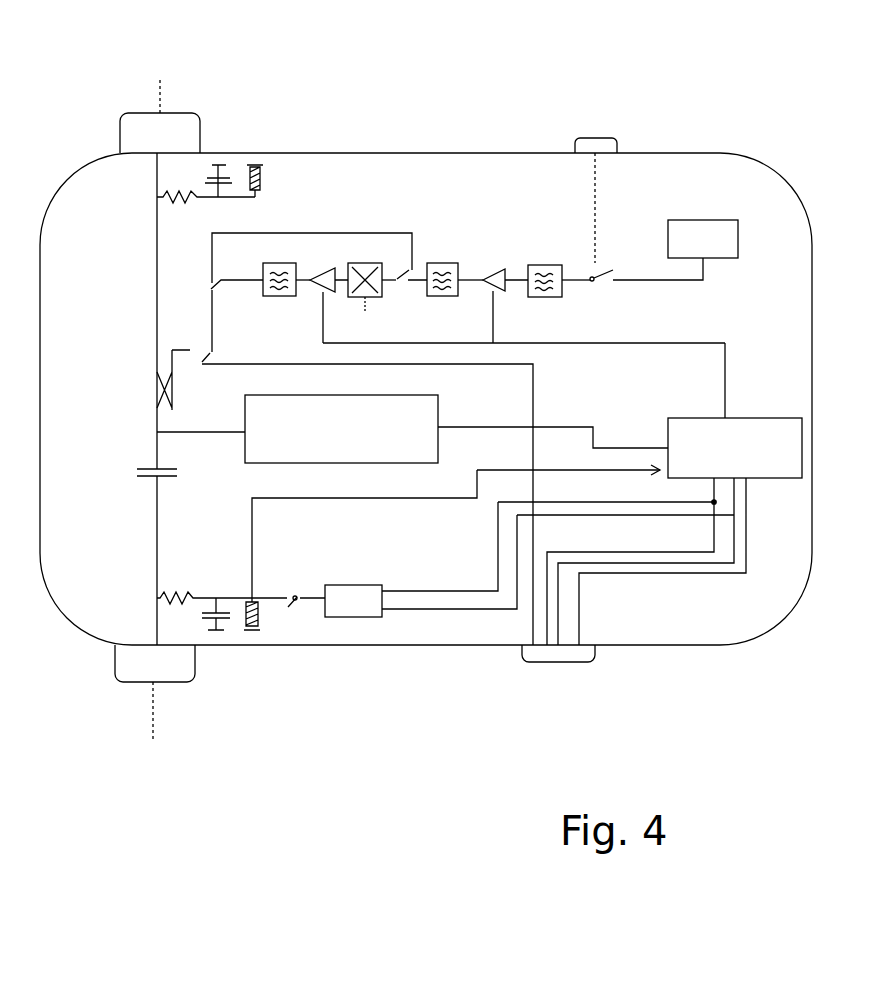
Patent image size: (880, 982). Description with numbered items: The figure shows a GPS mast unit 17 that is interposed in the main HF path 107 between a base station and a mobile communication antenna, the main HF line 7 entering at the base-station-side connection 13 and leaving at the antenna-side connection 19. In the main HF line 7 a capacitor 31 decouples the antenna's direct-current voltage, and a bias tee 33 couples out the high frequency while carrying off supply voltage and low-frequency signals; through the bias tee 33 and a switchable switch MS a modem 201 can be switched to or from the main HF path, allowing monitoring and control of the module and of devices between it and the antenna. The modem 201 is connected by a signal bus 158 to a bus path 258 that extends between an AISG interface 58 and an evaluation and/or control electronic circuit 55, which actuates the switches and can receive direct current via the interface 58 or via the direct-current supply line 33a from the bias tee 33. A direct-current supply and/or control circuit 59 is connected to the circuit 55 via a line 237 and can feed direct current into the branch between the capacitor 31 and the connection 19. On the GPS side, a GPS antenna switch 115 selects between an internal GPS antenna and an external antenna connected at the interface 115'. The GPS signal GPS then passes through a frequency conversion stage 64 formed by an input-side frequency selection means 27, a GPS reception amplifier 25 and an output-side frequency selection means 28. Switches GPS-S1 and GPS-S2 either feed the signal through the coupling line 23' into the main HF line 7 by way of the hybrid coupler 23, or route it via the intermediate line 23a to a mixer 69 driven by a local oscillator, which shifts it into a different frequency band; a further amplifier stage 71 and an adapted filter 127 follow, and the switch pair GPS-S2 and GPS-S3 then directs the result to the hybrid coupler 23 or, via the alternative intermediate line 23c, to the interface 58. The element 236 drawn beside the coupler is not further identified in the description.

The GPS mast unit 17 is at (73, 622).
The antenna-side connection 19 is at (128, 110).
The main HF path 107 is at (160, 80).
The base-station-side connection 13 is at (123, 685).
The main HF line 7 is at (152, 523).
The capacitor 31 is at (125, 472).
The bias tee 33 is at (196, 578).
The direct-current supply line 33a is at (405, 498).
The modem 201 is at (363, 617).
The signal bus 158 is at (408, 616).
The switchable switch MS is at (295, 615).
The bus path 258 is at (590, 604).
The AISG interface 58 is at (585, 660).
The evaluation and/or control electronic circuit 55 is at (747, 426).
The direct-current supply circuit and/or control circuit 59 is at (425, 412).
The GPS signal GPS is at (560, 416).
The line 237 is at (559, 459).
The coupling line 23' is at (311, 187).
The alternative intermediate line 23c is at (233, 367).
The hybrid coupler 23 is at (119, 393).
The coupling 236 is at (188, 350).
The switch GPS-S3 is at (192, 362).
The switch GPS-S2 is at (203, 280).
The frequency selection means 127 is at (265, 296).
The further amplifier stage 71 is at (316, 284).
The mixer 69 is at (348, 262).
The frequency conversion stage 64 is at (365, 256).
The intermediate line 23a is at (387, 283).
The switch GPS-S1 is at (400, 258).
The output-side frequency selection means 28 is at (457, 263).
The GPS reception amplifier 25 is at (500, 268).
The input-side frequency selection means 27 is at (552, 265).
The GPS antenna switch 115 is at (670, 194).
The external GPS antenna interface 115' is at (634, 159).